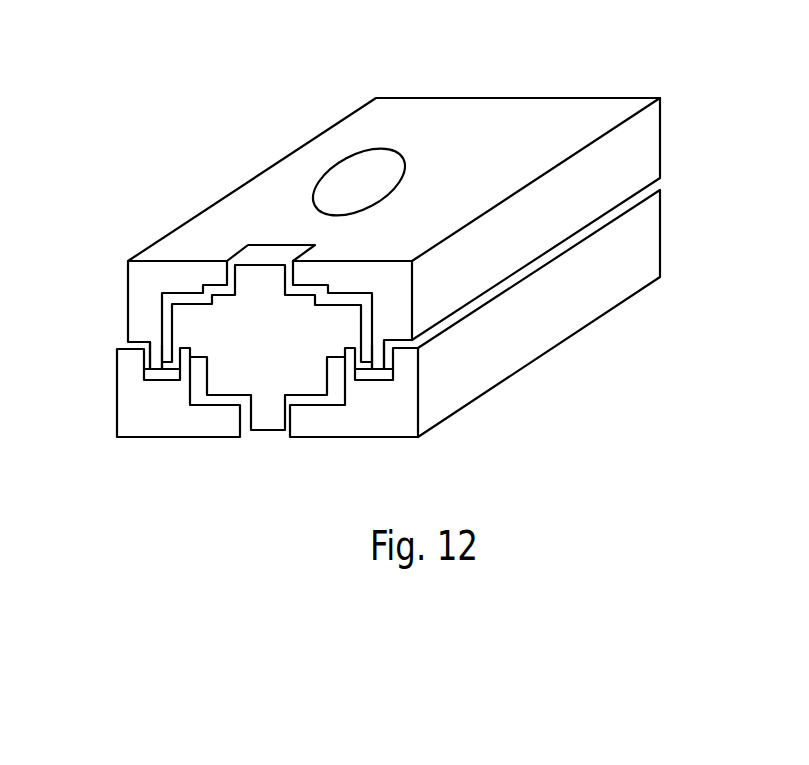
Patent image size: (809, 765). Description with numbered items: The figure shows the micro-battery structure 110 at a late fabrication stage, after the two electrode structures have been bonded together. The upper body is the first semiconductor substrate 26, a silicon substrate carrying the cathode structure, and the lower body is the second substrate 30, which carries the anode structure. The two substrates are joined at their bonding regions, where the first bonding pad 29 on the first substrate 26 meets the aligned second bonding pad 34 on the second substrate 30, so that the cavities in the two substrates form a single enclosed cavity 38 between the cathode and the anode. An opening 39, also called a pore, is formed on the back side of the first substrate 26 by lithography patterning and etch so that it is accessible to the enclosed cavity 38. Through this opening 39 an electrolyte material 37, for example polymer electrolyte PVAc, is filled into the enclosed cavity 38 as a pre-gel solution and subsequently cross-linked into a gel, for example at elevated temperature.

The micro-battery structure 110 is at (733, 94).
The first semiconductor substrate 26 is at (652, 138).
The second substrate 30 is at (652, 238).
The opening 39 is at (350, 180).
The enclosed cavity 38 is at (361, 332).
The first bonding pad 29 is at (156, 367).
The second bonding pad 34 is at (156, 374).
The electrolyte material 37 is at (258, 370).